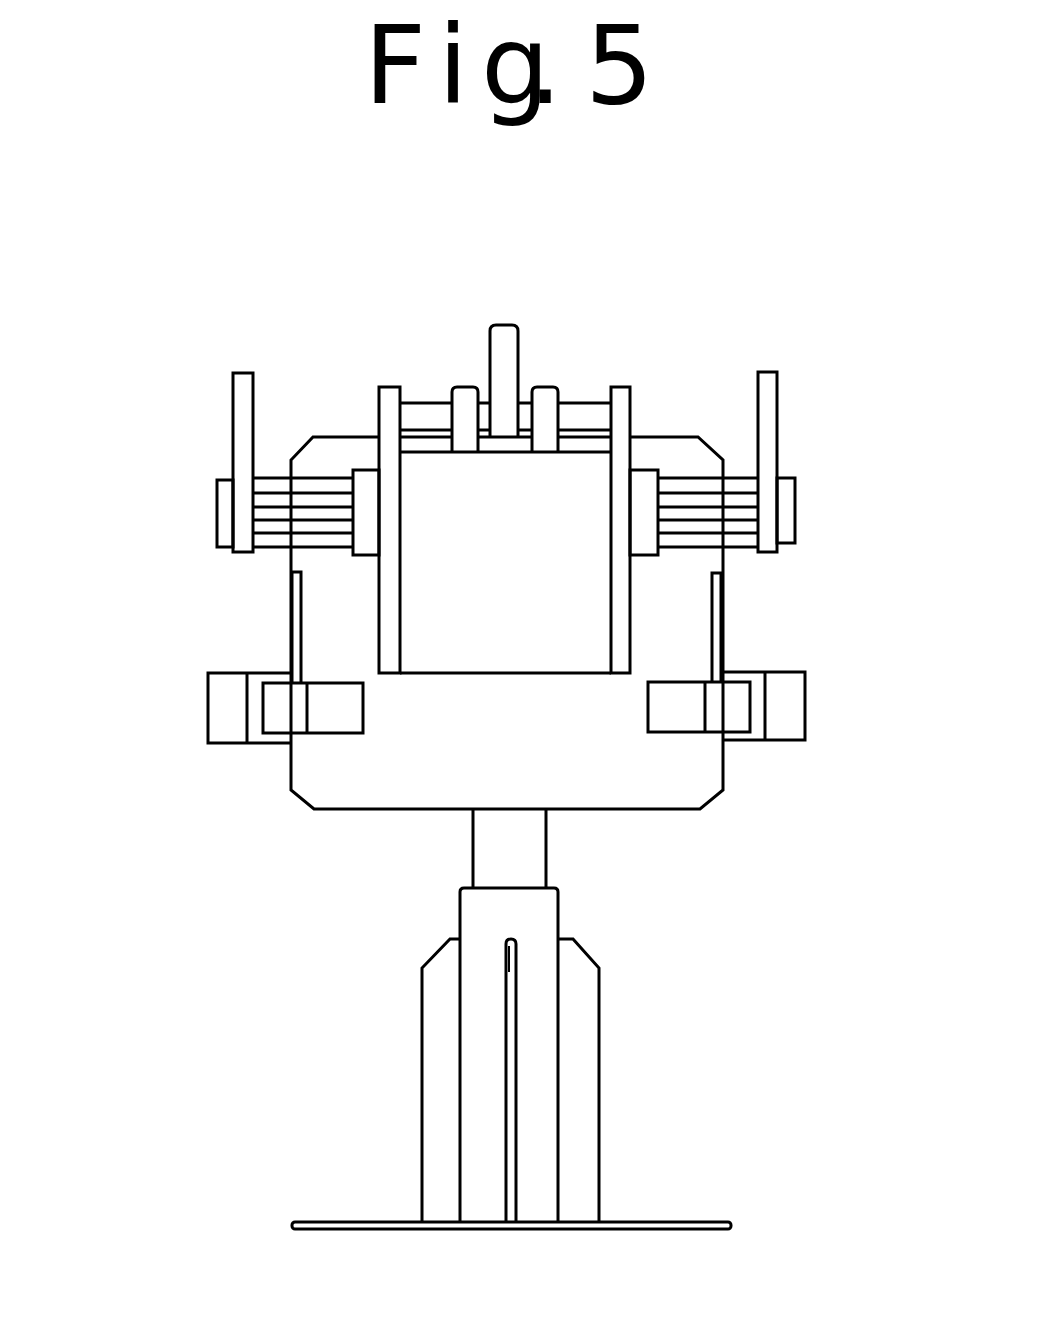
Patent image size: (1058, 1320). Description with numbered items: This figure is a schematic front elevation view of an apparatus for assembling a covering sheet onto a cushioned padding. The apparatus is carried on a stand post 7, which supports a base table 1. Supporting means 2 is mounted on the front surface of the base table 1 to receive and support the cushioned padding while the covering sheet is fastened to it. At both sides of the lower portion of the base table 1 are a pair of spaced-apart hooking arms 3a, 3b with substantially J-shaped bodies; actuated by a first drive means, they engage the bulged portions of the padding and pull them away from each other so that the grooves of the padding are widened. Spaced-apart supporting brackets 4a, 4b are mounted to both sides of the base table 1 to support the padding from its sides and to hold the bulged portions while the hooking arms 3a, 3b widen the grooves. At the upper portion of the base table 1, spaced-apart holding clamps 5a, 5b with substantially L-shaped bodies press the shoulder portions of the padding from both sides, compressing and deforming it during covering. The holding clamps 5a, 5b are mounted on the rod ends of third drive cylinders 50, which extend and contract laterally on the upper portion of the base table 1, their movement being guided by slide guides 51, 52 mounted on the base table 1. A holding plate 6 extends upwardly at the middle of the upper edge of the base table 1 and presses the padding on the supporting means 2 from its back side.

The base table 1 is at (638, 810).
The supporting means 2 is at (583, 400).
The hooking arm 3a is at (218, 708).
The hooking arm 3b is at (793, 710).
The supporting bracket 4a is at (307, 650).
The supporting bracket 4b is at (712, 645).
The holding clamp 5a is at (222, 417).
The holding clamp 5b is at (787, 390).
The holding plate 6 is at (497, 353).
The stand post 7 is at (488, 859).
The third drive cylinder 50 is at (368, 466).
The slide guide 51 is at (270, 477).
The slide guide 52 is at (280, 550).